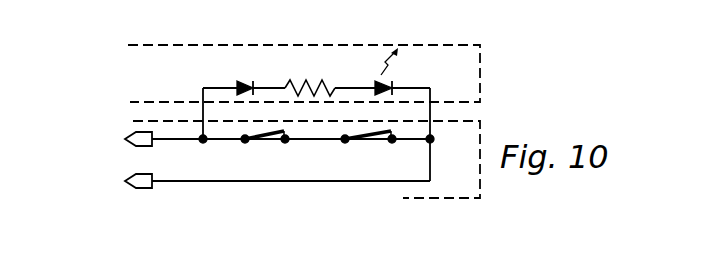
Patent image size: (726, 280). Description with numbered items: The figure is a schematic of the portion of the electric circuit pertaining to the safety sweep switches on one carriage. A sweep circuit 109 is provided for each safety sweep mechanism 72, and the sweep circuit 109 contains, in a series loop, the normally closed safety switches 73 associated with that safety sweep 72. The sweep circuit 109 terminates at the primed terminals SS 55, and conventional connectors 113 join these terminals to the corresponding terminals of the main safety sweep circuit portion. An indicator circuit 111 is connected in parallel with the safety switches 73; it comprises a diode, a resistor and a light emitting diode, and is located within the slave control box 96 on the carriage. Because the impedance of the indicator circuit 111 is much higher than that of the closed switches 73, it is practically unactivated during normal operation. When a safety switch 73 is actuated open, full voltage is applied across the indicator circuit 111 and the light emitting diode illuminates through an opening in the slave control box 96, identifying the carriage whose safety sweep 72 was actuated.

The slave control box 96 is at (481, 56).
The safety sweep mechanism 72 is at (485, 145).
The indicator circuit 111 is at (195, 88).
The sweep circuit 109 is at (252, 192).
The safety switch 73 is at (263, 136).
The connector 113 is at (133, 133).
The cable connector 55 is at (113, 160).